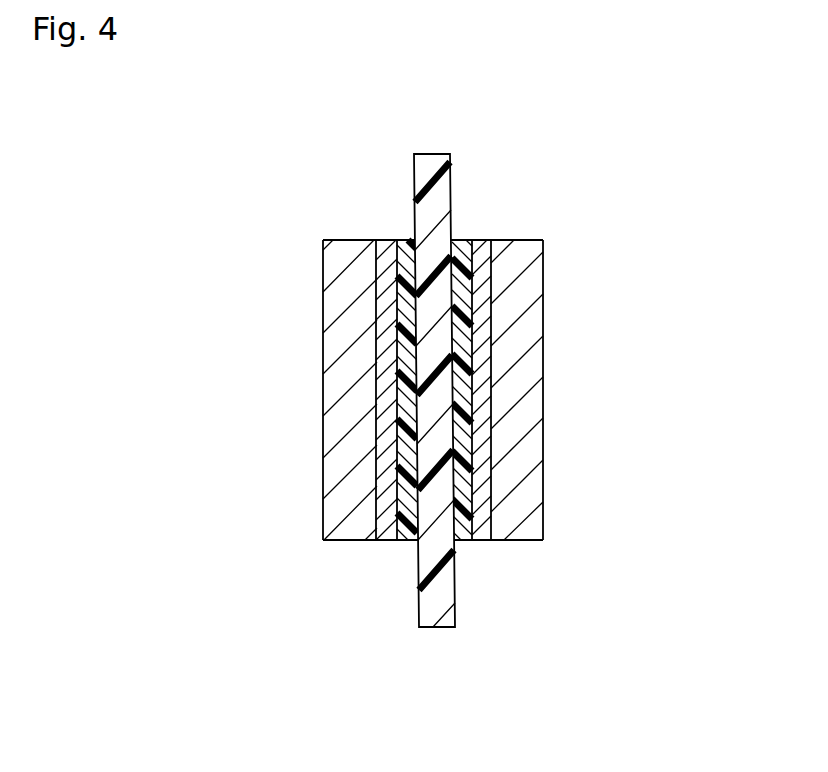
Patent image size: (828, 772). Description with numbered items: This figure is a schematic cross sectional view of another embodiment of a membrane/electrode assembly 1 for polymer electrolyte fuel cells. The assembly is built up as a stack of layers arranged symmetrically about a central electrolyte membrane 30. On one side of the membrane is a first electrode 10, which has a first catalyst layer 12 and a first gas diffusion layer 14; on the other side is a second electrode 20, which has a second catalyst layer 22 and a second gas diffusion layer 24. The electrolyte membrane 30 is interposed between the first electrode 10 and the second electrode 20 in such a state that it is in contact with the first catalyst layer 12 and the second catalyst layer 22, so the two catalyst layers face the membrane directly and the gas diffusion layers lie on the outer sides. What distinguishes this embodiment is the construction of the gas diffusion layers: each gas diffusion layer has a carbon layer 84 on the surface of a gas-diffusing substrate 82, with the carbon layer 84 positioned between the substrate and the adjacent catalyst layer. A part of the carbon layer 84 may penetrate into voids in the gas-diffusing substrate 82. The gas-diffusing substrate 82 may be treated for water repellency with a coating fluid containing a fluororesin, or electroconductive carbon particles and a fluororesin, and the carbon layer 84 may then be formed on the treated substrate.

The membrane/electrode assembly 1 is at (487, 184).
The first electrode 10 is at (310, 653).
The first catalyst layer 12 is at (410, 538).
The first gas diffusion layer 14 is at (370, 613).
The second electrode 20 is at (470, 653).
The second catalyst layer 22 is at (457, 538).
The second gas diffusion layer 24 is at (503, 613).
The electrolyte membrane 30 is at (443, 617).
The gas-diffusing substrate 82 is at (345, 541).
The carbon layer 84 is at (387, 541).